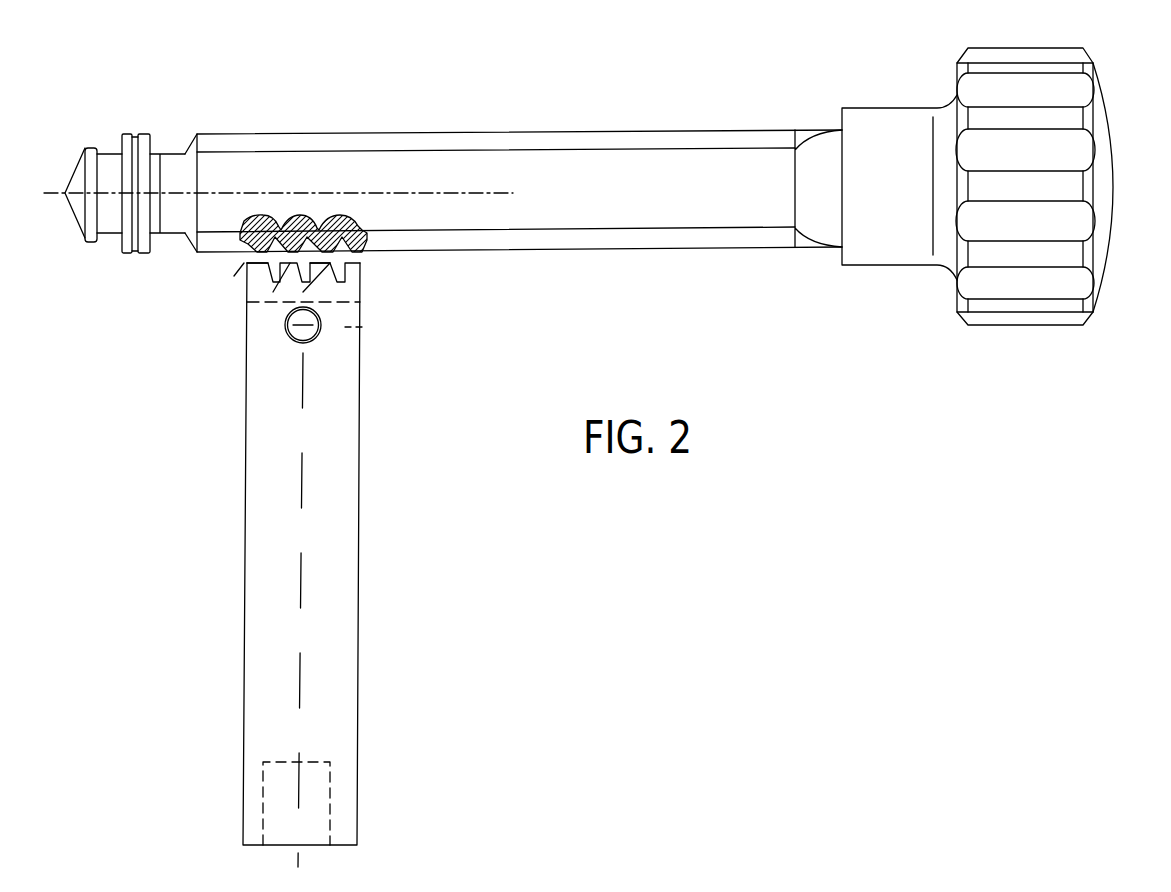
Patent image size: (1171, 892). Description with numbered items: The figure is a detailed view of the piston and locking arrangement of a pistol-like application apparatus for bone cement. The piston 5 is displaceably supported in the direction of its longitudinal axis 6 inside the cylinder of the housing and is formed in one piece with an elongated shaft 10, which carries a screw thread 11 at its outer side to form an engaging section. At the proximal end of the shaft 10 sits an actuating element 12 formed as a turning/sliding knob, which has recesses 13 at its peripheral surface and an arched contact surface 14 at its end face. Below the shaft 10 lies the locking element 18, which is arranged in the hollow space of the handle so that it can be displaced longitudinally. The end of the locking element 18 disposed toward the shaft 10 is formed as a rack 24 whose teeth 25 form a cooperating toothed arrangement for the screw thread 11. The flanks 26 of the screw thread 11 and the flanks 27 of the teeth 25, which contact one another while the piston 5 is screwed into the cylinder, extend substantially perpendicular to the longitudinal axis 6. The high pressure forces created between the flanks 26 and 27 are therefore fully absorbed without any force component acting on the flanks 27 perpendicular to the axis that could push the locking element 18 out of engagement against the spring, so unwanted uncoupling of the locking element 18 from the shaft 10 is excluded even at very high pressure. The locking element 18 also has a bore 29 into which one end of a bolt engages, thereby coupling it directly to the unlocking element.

The piston 5 is at (110, 222).
The longitudinal axis 6 is at (460, 190).
The elongated shaft 10 is at (580, 175).
The screw thread 11 is at (675, 143).
The actuating element 12 is at (1022, 93).
The recesses 13 is at (1073, 227).
The arched contact surface 14 is at (1113, 140).
The locking element 18 is at (340, 606).
The rack 24 is at (343, 293).
The teeth 25 is at (343, 270).
The flanks of the screw thread 26 is at (258, 262).
The flanks of the teeth 27 is at (370, 235).
The bore 29 is at (313, 333).